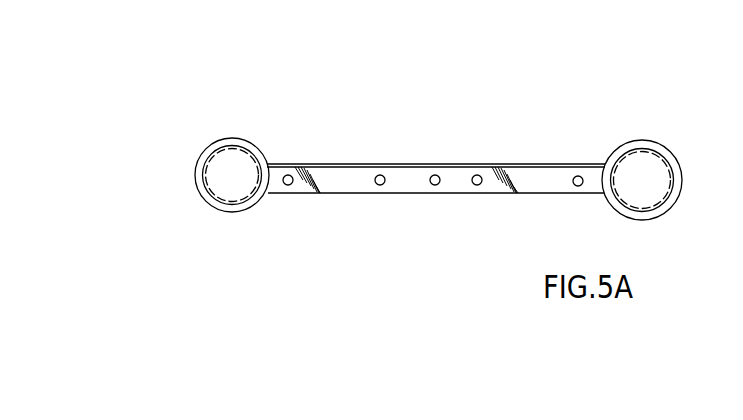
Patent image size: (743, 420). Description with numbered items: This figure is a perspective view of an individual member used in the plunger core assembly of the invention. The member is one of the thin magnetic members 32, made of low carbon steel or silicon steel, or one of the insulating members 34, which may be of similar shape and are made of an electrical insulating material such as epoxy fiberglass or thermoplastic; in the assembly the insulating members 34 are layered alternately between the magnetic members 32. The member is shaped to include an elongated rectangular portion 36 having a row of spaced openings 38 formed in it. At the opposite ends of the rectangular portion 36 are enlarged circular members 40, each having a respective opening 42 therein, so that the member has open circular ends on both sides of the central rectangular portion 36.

The thin magnetic member 32 is at (436, 229).
The insulating member 34 is at (470, 220).
The elongated rectangular portion 36 is at (453, 167).
The spaced openings 38 is at (377, 175).
The enlarged circular member 40 is at (235, 213).
The opening 42 is at (217, 172).